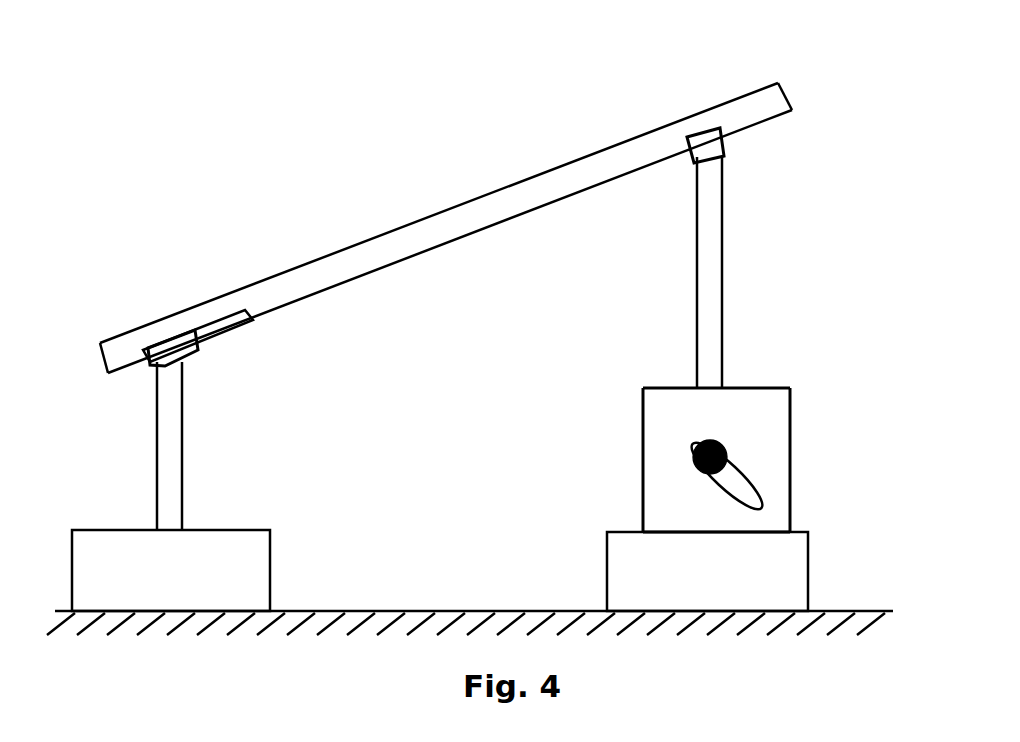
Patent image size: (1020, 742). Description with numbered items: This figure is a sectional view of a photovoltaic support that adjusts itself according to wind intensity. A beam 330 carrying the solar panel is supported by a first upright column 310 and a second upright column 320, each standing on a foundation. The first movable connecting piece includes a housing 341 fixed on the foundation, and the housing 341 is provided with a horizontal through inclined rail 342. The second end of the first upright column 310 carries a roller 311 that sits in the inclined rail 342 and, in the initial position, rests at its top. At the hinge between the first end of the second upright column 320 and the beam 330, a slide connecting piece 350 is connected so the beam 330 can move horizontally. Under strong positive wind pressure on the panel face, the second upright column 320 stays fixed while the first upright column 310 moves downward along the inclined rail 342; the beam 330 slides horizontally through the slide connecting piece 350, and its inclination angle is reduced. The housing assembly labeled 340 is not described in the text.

The first upright column 310 is at (717, 260).
The roller 311 is at (692, 448).
The second upright column 320 is at (182, 440).
The beam 330 is at (772, 105).
The adjustment housing 340 is at (791, 425).
The housing 341 is at (643, 507).
The inclined rail 342 is at (752, 477).
The slide connecting piece 350 is at (180, 322).